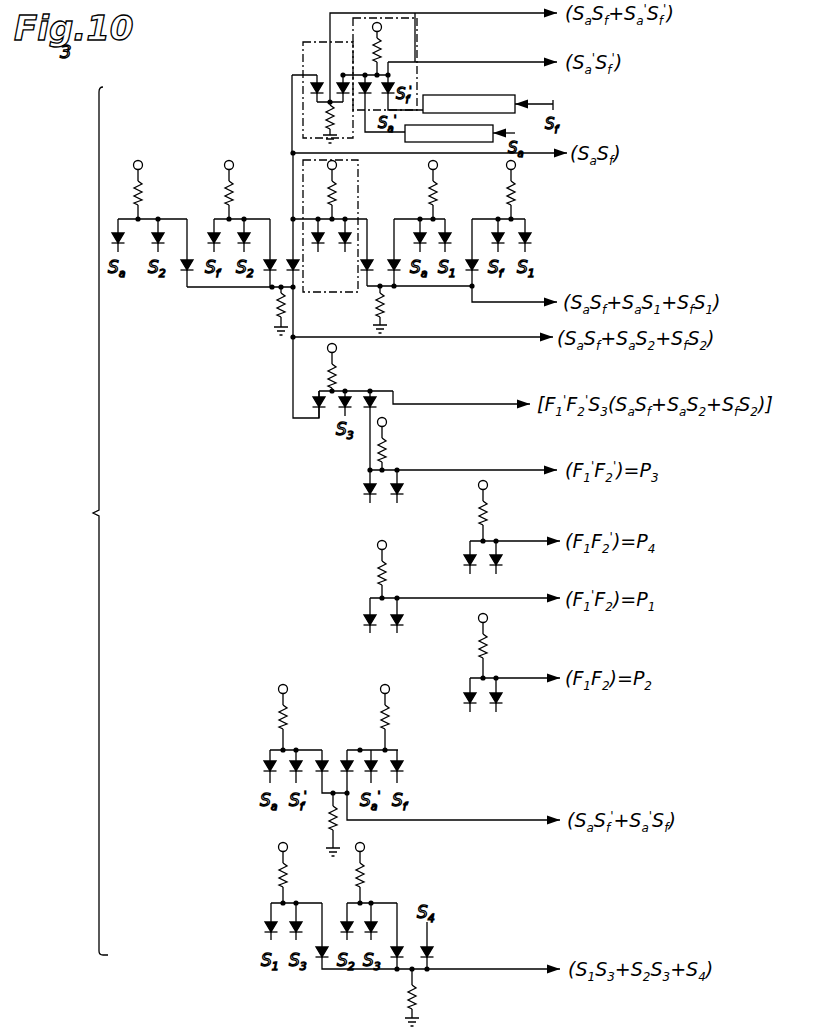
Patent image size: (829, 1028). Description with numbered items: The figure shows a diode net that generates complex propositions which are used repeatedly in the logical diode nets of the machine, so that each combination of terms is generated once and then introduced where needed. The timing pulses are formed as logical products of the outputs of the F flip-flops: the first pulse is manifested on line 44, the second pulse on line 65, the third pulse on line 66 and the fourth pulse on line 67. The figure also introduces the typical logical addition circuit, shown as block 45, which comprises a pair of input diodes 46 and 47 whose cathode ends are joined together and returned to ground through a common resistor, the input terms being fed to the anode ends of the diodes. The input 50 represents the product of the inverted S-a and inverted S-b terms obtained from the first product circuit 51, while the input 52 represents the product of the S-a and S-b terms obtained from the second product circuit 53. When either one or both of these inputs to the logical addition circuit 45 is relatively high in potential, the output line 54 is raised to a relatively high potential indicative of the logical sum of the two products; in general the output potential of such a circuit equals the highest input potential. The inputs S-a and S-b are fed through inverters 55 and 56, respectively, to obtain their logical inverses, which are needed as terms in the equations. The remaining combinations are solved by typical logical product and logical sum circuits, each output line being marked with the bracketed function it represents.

The line 44 is at (447, 598).
The logical addition circuit 45 is at (303, 53).
The input diode 46 is at (318, 82).
The input diode 47 is at (344, 81).
The input 50 is at (364, 70).
The first product circuit 51 is at (418, 50).
The input 52 is at (292, 115).
The second product circuit 53 is at (358, 185).
The output line 54 is at (442, 14).
The inverter 55 is at (405, 142).
The inverter 56 is at (470, 95).
The line 65 is at (525, 678).
The line 66 is at (496, 469).
The line 67 is at (519, 541).